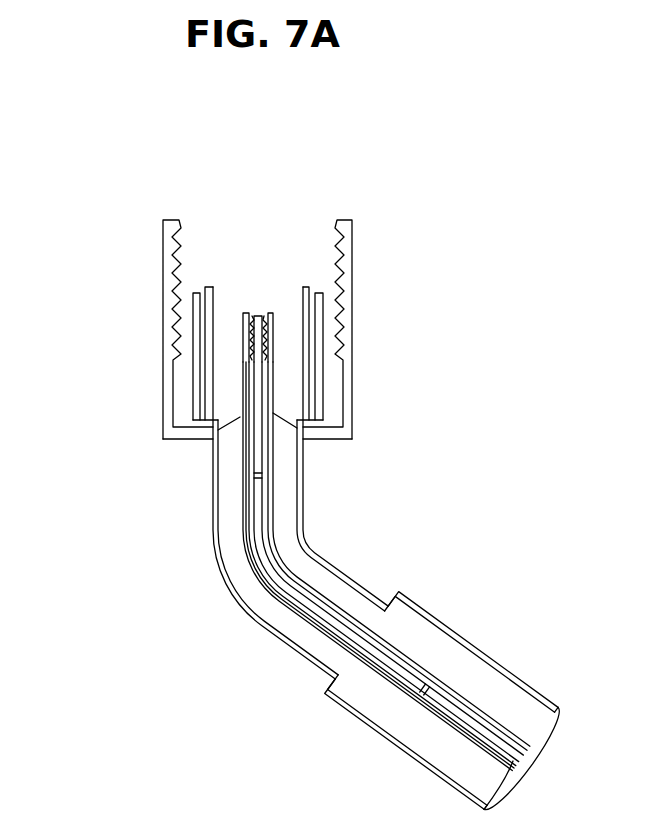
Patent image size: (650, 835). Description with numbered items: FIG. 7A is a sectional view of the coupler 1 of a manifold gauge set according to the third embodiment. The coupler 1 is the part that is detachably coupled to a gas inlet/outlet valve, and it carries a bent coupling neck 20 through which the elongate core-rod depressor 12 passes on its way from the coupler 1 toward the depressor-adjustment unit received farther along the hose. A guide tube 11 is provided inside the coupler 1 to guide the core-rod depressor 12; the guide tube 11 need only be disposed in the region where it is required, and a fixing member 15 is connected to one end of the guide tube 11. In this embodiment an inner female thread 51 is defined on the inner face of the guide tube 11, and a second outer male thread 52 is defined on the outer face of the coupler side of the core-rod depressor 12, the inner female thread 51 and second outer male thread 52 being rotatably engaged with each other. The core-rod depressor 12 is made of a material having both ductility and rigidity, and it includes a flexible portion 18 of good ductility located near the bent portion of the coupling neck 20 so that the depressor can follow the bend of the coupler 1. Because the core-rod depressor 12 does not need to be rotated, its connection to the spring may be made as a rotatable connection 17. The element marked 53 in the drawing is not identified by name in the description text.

The coupler 1 is at (393, 302).
The guide tube 11 is at (240, 300).
The core-rod depressor 12 is at (200, 252).
The fixing member 15 is at (290, 413).
The rotatable connection 17 is at (262, 476).
The flexible portion 18 is at (268, 572).
The coupling neck 20 is at (187, 595).
The inner female thread 51 is at (245, 332).
The second outer male thread 52 is at (257, 358).
The spring 53 is at (227, 343).